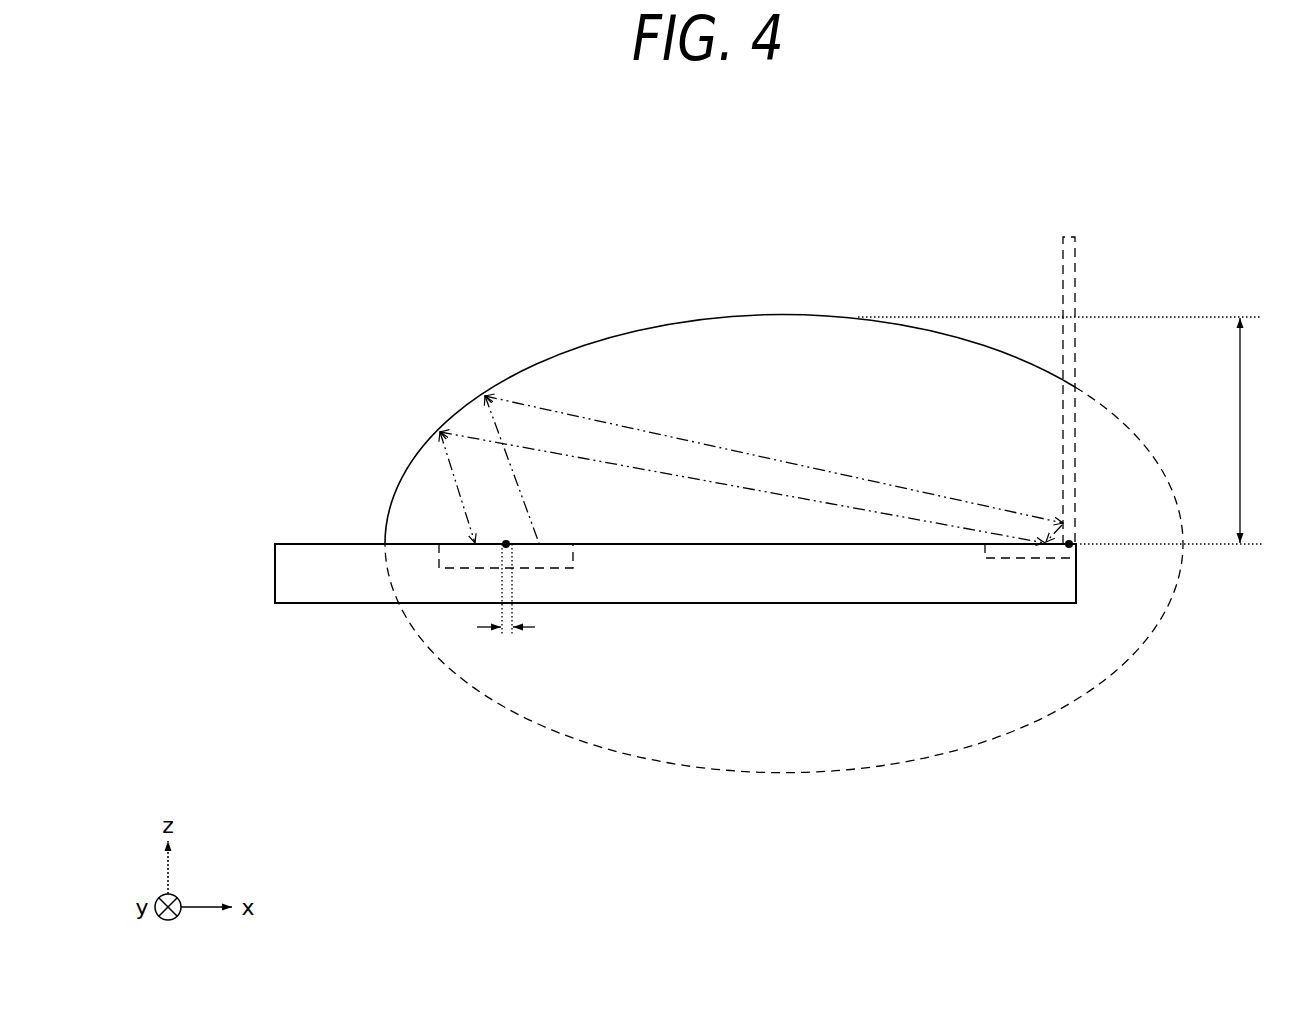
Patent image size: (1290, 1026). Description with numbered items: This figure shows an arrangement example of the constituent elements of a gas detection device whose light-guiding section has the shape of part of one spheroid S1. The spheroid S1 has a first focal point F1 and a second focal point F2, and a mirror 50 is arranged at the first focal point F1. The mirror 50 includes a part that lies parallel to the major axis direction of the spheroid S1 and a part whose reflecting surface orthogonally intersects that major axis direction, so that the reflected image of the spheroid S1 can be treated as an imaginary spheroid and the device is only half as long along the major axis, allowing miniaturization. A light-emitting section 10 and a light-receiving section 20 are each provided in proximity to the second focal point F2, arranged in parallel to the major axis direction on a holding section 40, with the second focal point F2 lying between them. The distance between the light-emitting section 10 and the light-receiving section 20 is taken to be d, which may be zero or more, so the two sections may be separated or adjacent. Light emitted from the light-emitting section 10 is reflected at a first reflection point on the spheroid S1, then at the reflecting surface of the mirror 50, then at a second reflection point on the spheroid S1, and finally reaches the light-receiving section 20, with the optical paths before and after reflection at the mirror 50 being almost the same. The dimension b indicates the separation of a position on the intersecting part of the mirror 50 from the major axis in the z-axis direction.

The light-emitting section 10 is at (542, 568).
The light-receiving section 20 is at (468, 568).
The holding section 40 is at (675, 603).
The mirror 50 is at (1028, 558).
The spheroid S1 is at (788, 773).
The first focal point F1 is at (1069, 544).
The second focal point F2 is at (506, 544).
The separation distance from the major axis in the z-axis direction b is at (1064, 430).
The distance between the light-emitting section and the light-receiving section d is at (506, 609).